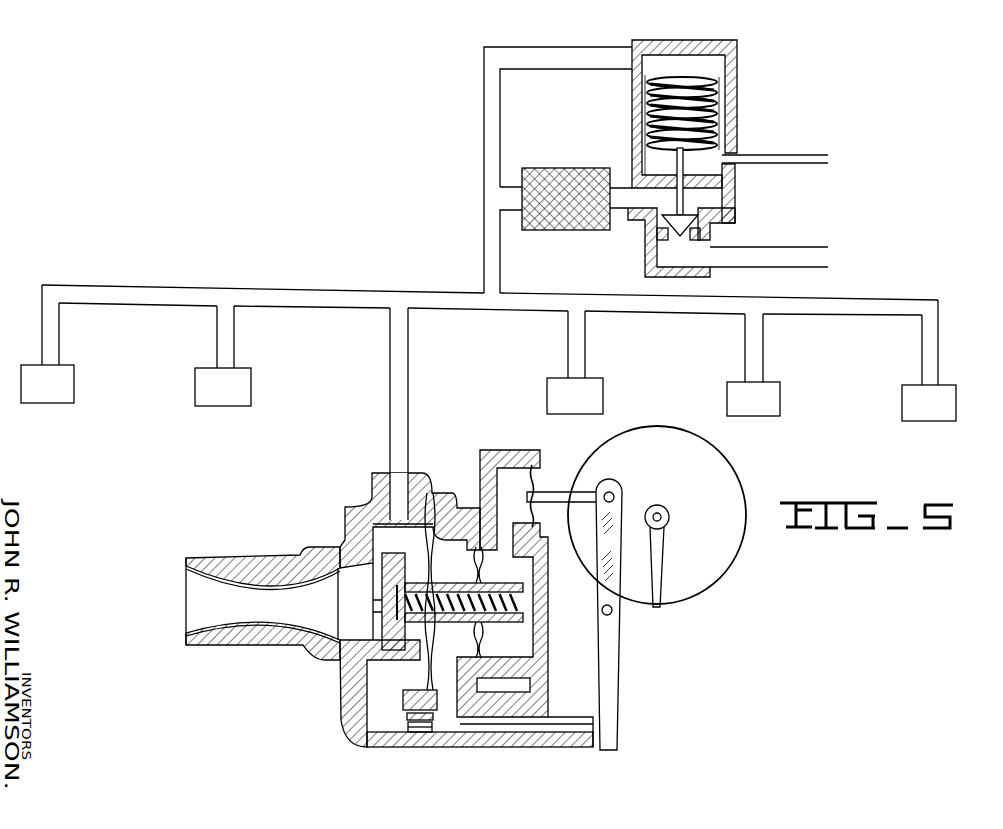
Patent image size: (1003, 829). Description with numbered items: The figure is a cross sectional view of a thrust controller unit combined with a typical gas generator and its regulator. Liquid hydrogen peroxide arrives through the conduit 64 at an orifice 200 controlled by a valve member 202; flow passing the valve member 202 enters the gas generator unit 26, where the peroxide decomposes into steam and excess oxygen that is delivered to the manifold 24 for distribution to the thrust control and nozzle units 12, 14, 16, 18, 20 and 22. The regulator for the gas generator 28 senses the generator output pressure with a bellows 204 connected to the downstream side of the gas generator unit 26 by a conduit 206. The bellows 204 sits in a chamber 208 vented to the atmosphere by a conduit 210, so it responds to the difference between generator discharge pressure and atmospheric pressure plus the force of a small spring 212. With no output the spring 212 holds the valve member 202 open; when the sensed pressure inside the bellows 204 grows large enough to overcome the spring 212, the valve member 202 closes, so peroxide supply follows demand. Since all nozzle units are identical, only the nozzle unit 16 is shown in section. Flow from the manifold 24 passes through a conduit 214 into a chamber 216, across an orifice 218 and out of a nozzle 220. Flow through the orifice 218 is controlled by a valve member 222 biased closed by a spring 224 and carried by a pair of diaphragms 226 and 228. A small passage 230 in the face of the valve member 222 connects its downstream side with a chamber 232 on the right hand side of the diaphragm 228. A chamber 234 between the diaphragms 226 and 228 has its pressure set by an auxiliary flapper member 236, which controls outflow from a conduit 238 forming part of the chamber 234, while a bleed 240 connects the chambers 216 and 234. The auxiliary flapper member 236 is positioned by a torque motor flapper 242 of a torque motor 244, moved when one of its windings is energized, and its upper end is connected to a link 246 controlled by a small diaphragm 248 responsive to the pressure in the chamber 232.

The thrust control and nozzle unit 12 is at (40, 397).
The thrust control and nozzle unit 14 is at (216, 400).
The nozzle unit 16 is at (502, 442).
The thrust control and nozzle unit 18 is at (568, 409).
The thrust control and nozzle unit 20 is at (746, 412).
The thrust control and nozzle unit 22 is at (922, 416).
The manifold 24 is at (385, 293).
The gas generator unit 26 is at (552, 168).
The regulator for the gas generator 28 is at (742, 68).
The conduit 64 is at (762, 250).
The orifice 200 is at (662, 246).
The valve member 202 is at (712, 212).
The bellows 204 is at (705, 100).
The conduit 206 is at (502, 118).
The chamber 208 is at (722, 120).
The conduit 210 is at (815, 165).
The spring 212 is at (656, 162).
The conduit 214 is at (410, 372).
The chamber 216 is at (344, 688).
The orifice 218 is at (306, 658).
The nozzle 220 is at (258, 622).
The valve member 222 is at (376, 556).
The spring 224 is at (522, 606).
The diaphragm 226 is at (424, 668).
The diaphragm 228 is at (500, 675).
The passage 230 is at (396, 600).
The chamber 232 is at (530, 660).
The chamber 234 is at (449, 575).
The auxiliary flapper member 236 is at (606, 680).
The conduit 238 is at (540, 732).
The bleed 240 is at (437, 728).
The torque motor flapper 242 is at (662, 560).
The torque motor 244 is at (742, 492).
The link 246 is at (585, 492).
The small diaphragm 248 is at (540, 465).